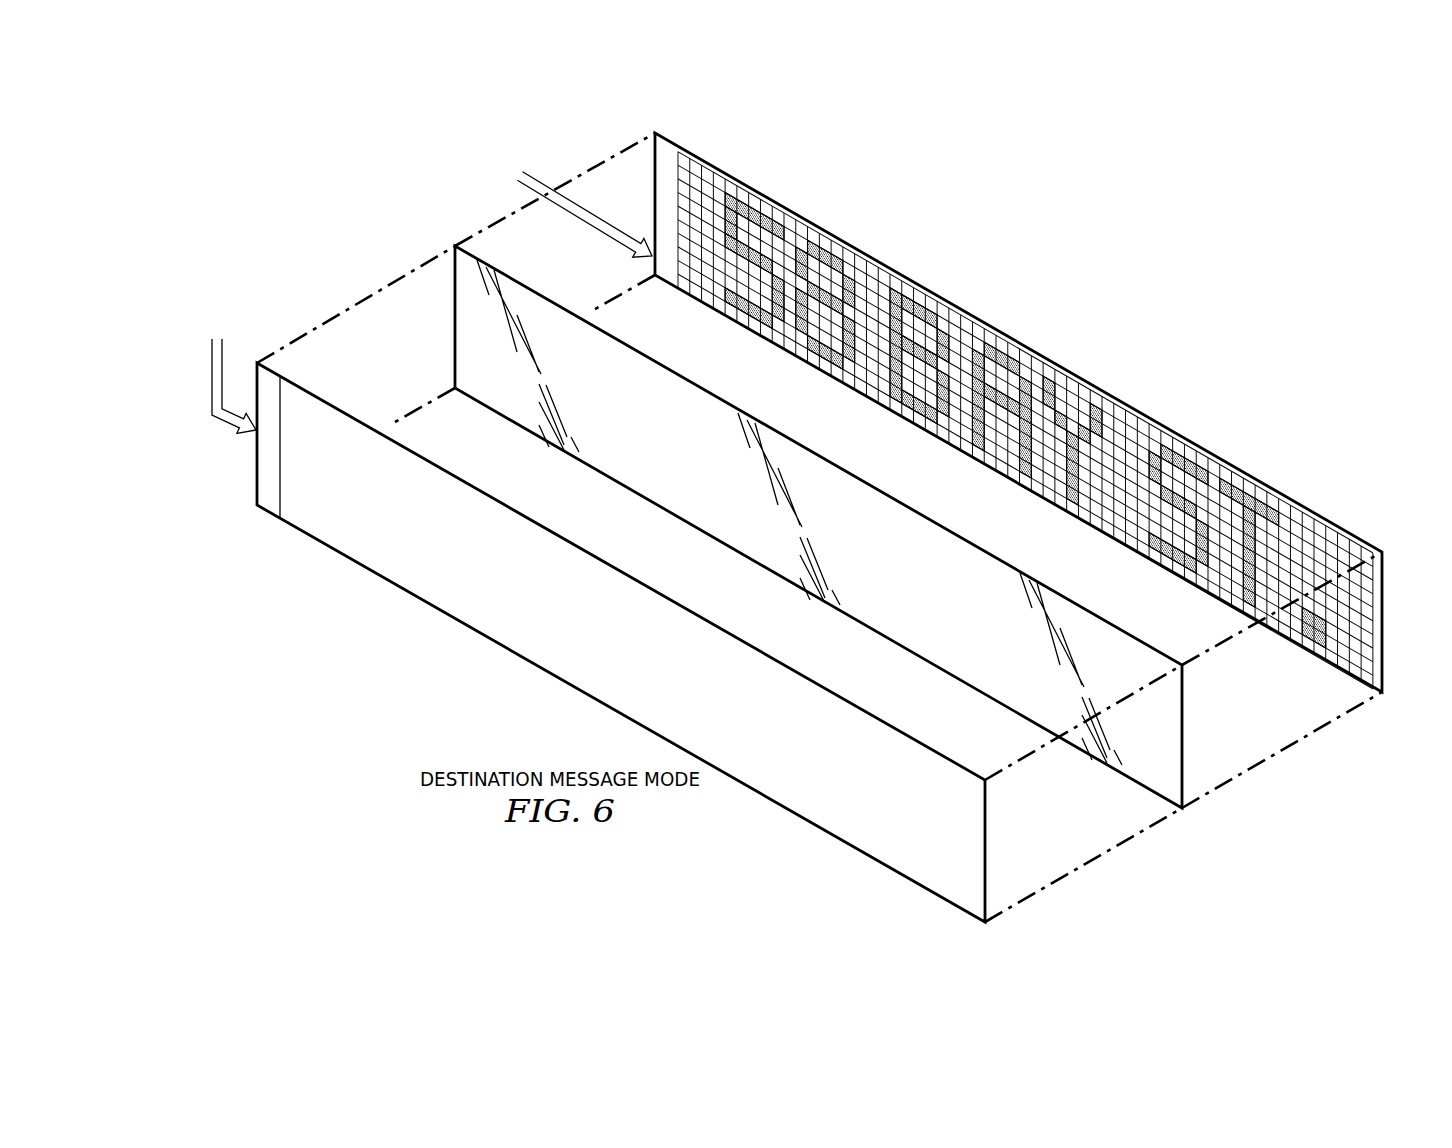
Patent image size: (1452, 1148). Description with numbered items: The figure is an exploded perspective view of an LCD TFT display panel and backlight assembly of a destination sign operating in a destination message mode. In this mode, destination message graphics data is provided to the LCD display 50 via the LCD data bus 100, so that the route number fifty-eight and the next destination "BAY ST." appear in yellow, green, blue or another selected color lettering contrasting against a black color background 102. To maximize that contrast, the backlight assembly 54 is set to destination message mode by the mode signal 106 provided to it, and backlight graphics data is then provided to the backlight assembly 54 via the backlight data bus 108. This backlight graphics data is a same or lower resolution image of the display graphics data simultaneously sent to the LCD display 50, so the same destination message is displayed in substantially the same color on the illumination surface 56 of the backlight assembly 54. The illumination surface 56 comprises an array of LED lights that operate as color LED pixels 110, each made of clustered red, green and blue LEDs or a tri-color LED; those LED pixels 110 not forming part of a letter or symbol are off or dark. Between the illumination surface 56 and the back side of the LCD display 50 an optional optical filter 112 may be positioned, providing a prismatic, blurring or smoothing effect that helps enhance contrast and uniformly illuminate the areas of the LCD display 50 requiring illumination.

The LCD display 50 is at (388, 579).
The backlight assembly 54 is at (671, 139).
The illumination surface 56 is at (1103, 498).
The LCD data bus 100 is at (223, 424).
The black color background 102 is at (850, 833).
The mode signal 106 is at (997, 384).
The backlight data bus 108 is at (586, 224).
The color LED pixels 110 is at (910, 293).
The optical filter 112 is at (696, 524).